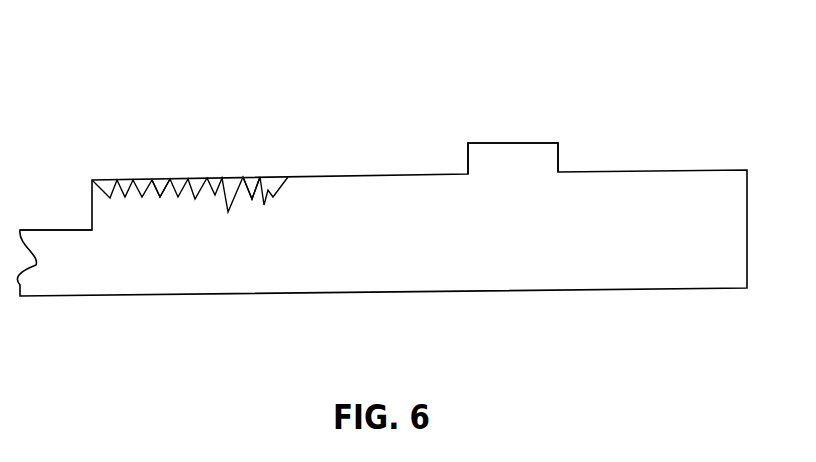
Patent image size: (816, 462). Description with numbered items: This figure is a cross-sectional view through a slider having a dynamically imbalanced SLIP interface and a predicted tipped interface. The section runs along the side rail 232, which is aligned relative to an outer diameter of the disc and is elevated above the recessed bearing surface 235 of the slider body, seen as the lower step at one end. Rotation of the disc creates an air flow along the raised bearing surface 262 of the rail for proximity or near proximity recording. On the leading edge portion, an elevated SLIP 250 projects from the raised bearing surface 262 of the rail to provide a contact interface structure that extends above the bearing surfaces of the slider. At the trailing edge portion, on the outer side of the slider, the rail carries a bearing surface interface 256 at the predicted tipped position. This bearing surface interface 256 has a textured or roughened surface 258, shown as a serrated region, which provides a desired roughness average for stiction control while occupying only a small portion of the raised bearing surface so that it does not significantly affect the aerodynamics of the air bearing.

The side rail 232 is at (700, 170).
The recessed bearing surface 235 is at (54, 230).
The SLIP 250 is at (503, 143).
The bearing surface interface 256 is at (208, 165).
The textured or roughened surface 258 is at (160, 196).
The raised bearing surface 262 is at (252, 176).